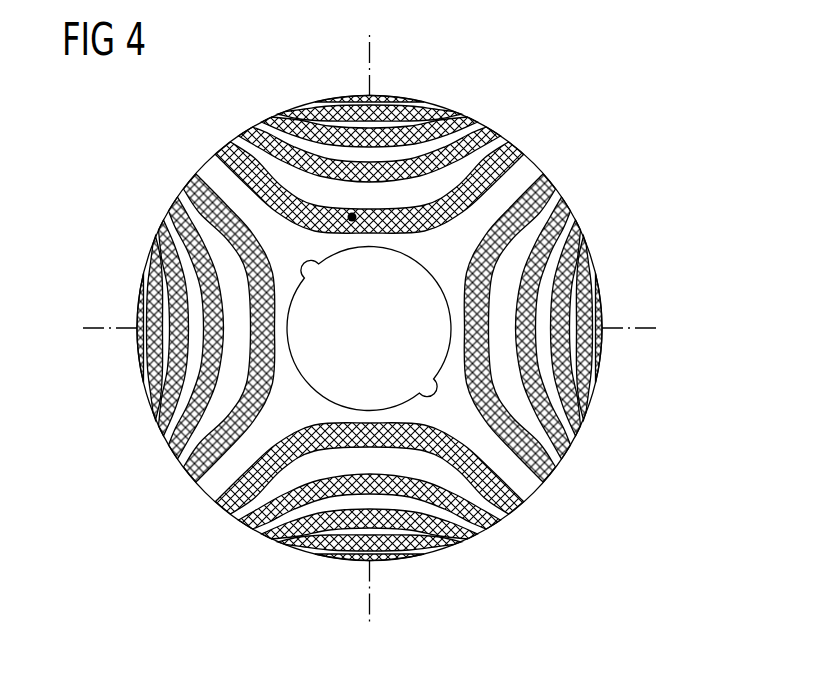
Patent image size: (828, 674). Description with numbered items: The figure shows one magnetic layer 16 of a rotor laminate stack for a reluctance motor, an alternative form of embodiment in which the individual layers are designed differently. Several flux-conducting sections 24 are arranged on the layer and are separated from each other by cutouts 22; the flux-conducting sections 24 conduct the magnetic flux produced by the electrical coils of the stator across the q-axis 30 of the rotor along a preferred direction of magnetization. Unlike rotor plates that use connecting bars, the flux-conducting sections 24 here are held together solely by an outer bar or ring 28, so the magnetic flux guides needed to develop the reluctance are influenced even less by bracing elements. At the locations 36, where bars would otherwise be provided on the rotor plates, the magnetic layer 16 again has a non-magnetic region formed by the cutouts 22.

The magnetic layer 16 is at (410, 290).
The cutouts 22 is at (477, 128).
The flux-conducting sections 24 is at (498, 152).
The outer ring 28 is at (543, 172).
The q-axis 30 is at (370, 50).
The locations 36 is at (352, 217).